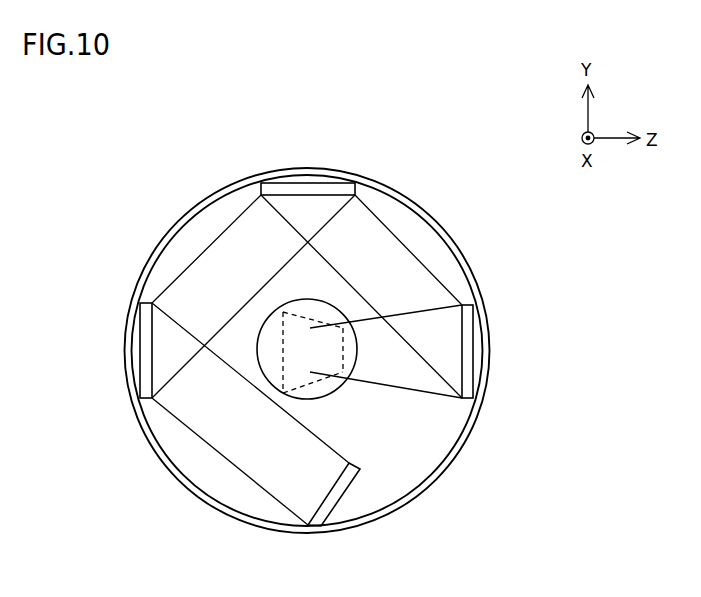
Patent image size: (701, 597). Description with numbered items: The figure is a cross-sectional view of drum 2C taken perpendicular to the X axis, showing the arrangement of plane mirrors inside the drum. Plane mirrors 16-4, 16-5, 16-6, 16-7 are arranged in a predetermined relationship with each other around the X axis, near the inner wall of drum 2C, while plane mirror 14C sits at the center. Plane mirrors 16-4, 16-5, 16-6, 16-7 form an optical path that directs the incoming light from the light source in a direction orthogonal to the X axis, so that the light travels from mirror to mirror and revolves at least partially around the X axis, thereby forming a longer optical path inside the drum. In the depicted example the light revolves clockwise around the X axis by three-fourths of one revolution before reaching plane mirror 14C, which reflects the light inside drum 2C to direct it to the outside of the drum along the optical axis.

The drum 2C is at (432, 230).
The plane mirror 16-6 is at (310, 190).
The plane mirror 16-5 is at (147, 353).
The plane mirror 16-7 is at (468, 353).
The plane mirror 16-4 is at (339, 489).
The plane mirror 14C is at (298, 372).